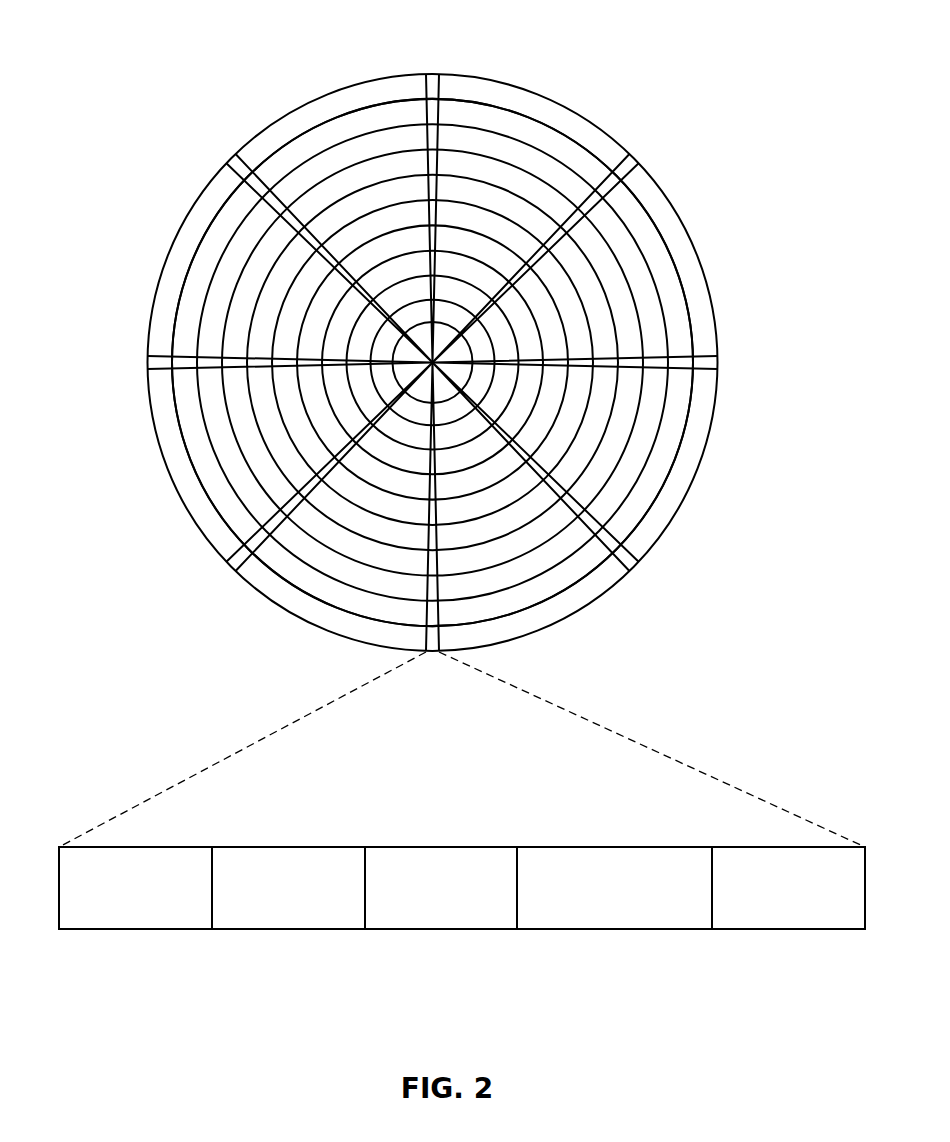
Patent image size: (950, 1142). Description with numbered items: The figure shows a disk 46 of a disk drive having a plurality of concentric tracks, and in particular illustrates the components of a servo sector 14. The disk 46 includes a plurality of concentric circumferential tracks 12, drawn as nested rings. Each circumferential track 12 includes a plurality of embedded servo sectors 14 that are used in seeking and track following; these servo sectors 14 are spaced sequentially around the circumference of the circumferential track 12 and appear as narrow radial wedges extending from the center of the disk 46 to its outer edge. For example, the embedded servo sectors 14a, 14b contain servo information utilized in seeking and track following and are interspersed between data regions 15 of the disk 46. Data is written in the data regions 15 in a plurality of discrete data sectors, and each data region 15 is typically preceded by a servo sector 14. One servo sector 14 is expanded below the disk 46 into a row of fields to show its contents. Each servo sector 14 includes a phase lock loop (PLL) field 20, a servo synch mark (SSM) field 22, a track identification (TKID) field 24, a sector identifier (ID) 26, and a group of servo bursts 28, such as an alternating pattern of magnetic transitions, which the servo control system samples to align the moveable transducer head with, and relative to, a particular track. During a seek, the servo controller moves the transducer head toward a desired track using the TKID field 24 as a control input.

The disk 46 is at (254, 46).
The circumferential track 12 is at (195, 250).
The servo sector 14 is at (435, 80).
The embedded servo sector 14a is at (238, 163).
The embedded servo sector 14b is at (153, 363).
The data region 15 is at (506, 122).
The phase lock loop (PLL) field 20 is at (85, 932).
The servo synch mark (SSM) field 22 is at (240, 932).
The track identification (TKID) field 24 is at (393, 932).
The sector identifier (ID) 26 is at (549, 932).
The servo bursts 28 is at (741, 932).